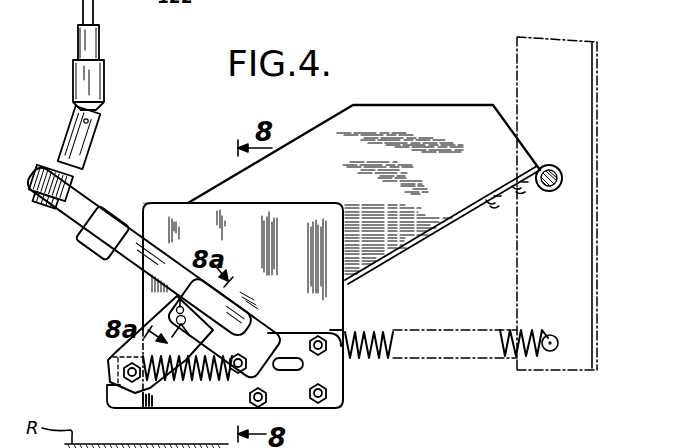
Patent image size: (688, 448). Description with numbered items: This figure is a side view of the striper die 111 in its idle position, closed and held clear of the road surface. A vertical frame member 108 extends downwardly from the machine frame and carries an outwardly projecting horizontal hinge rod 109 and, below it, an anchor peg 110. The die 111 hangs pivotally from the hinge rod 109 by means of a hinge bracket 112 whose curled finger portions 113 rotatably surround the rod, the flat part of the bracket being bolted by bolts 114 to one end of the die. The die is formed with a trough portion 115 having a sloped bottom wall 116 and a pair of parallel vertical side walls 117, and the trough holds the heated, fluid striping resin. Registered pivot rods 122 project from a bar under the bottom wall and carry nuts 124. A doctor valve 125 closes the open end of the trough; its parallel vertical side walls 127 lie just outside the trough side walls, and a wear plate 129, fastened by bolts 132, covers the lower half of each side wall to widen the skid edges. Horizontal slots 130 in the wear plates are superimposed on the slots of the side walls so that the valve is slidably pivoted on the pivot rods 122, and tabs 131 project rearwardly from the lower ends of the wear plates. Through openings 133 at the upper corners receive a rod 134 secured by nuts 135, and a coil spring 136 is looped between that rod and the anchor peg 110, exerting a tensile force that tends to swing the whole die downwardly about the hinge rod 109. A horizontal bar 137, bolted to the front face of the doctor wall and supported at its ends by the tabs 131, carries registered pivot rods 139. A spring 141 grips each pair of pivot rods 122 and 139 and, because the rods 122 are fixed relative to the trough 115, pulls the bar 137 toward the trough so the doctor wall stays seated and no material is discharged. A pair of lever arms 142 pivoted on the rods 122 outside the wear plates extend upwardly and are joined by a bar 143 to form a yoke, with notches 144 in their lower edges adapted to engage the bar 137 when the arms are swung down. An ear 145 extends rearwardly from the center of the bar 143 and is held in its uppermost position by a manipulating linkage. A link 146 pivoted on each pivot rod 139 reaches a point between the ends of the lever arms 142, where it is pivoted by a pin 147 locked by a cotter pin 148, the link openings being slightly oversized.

The vertical frame member 108 is at (598, 190).
The horizontal hinge rod 109 is at (556, 191).
The anchor peg 110 is at (577, 316).
The striper die 111 is at (386, 262).
The hinge bracket 112 is at (503, 183).
The curled finger portions 113 is at (576, 150).
The bolts 114 is at (493, 208).
The trough portion 115 is at (329, 116).
The sloped bottom wall 116 is at (430, 236).
The vertical side walls 117 is at (400, 97).
The pivot rods 122 is at (239, 397).
The nuts 124 is at (250, 348).
The doctor valve 125 is at (165, 203).
The side walls 127 is at (285, 195).
The wear plate 129 is at (299, 326).
The horizontal slots 130 is at (280, 369).
The tabs 131 is at (108, 393).
The bolts 132 is at (272, 403).
The through openings 133 is at (326, 336).
The rod 134 is at (325, 357).
The nuts 135 is at (322, 349).
The coil spring 136 is at (372, 330).
The horizontal bar 137 is at (120, 362).
The pivot rods 139 is at (123, 372).
The spring 141 is at (206, 390).
The lever arms 142 is at (228, 302).
The bar 143 is at (100, 230).
The notches 144 is at (130, 262).
The ear 145 is at (88, 180).
The link 146 is at (140, 346).
The pins 147 is at (186, 323).
The locking cotter pin 148 is at (190, 293).